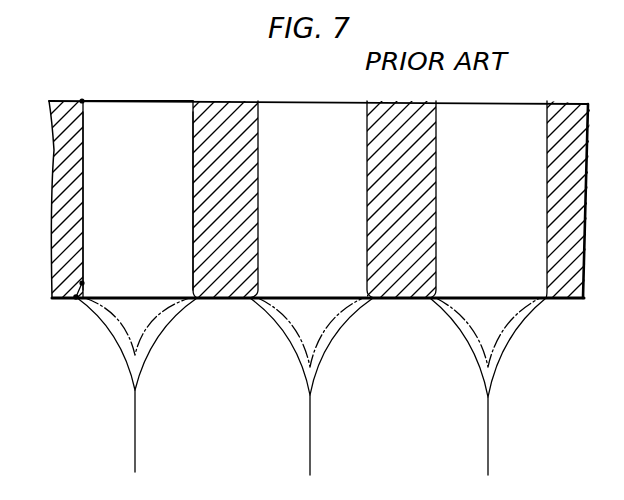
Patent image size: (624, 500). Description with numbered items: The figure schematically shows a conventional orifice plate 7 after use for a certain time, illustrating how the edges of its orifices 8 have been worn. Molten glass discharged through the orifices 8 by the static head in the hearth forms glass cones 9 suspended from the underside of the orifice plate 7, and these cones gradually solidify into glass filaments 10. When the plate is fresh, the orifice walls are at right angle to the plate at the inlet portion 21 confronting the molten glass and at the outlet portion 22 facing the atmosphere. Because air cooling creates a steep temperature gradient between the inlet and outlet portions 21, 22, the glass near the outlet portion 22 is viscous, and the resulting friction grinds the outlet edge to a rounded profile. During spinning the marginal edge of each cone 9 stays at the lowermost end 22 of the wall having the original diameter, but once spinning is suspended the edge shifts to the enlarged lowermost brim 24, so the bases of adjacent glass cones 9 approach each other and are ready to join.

The orifice plate 7 is at (57, 138).
The orifices 8 is at (148, 113).
The glass cones 9 is at (144, 331).
The glass filaments 10 is at (134, 434).
The inlet portion 21 is at (83, 100).
The outlet portion 22 is at (84, 282).
The enlarged lowermost brim 24 is at (74, 298).